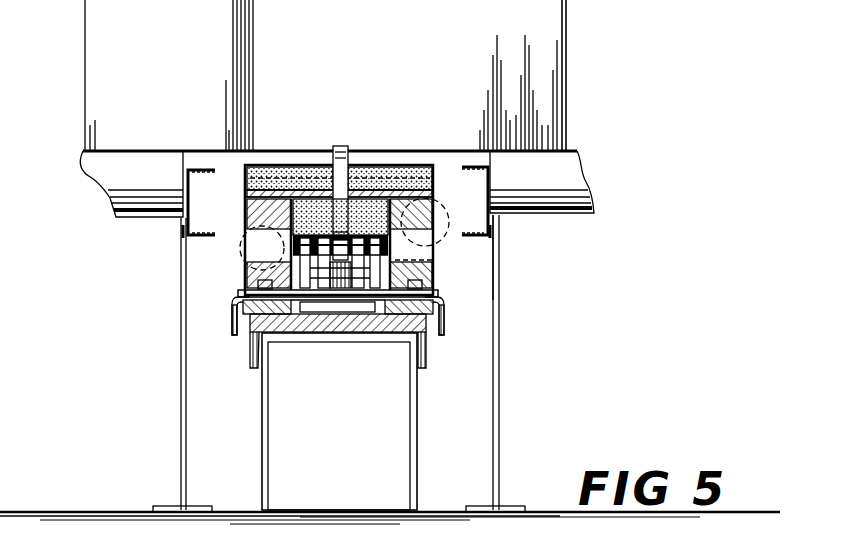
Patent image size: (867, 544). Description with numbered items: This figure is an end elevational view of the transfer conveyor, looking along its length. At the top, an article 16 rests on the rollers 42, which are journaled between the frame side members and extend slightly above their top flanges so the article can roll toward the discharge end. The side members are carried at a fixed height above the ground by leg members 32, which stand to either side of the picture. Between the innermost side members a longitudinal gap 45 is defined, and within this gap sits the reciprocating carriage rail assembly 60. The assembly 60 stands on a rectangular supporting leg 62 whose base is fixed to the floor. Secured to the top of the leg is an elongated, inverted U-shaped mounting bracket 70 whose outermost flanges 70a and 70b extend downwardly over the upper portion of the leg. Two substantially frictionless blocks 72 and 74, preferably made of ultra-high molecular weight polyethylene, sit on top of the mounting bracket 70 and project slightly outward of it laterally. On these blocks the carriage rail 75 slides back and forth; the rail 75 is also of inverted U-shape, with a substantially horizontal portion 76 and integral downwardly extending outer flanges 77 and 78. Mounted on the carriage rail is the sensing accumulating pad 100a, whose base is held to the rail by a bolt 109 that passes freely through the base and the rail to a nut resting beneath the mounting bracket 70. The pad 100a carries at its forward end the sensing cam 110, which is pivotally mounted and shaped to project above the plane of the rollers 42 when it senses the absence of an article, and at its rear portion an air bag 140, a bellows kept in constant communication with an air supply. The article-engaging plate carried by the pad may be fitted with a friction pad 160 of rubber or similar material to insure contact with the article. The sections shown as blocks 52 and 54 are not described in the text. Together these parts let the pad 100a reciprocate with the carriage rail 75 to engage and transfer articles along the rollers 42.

The article 16 is at (357, 72).
The leg member 32 is at (182, 393).
The roller 42 is at (100, 180).
The gap 45 is at (265, 158).
The left block 52 is at (250, 212).
The right block 54 is at (432, 242).
The reciprocating carriage rail assembly 60 is at (183, 326).
The supporting leg 62 is at (369, 509).
The mounting bracket 70 is at (341, 330).
The outermost flange 70a is at (252, 346).
The outermost flange 70b is at (425, 344).
The frictionless block 72 is at (251, 294).
The frictionless block 74 is at (436, 297).
The carriage rail 75 is at (372, 306).
The horizontal portion 76 is at (320, 305).
The outer flange 77 is at (230, 312).
The outer flange 78 is at (445, 308).
The sensing accumulating pad 100a is at (500, 272).
The bolt 109 is at (300, 252).
The sensing cam 110 is at (348, 152).
The air bag 140 is at (433, 213).
The friction pad 160 is at (400, 166).